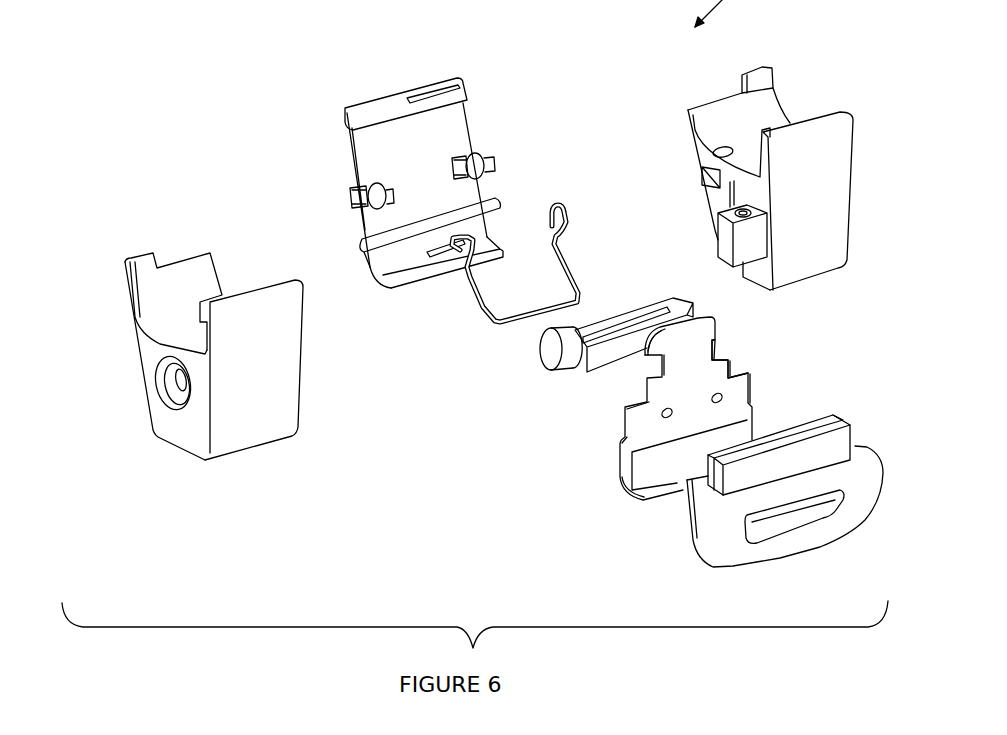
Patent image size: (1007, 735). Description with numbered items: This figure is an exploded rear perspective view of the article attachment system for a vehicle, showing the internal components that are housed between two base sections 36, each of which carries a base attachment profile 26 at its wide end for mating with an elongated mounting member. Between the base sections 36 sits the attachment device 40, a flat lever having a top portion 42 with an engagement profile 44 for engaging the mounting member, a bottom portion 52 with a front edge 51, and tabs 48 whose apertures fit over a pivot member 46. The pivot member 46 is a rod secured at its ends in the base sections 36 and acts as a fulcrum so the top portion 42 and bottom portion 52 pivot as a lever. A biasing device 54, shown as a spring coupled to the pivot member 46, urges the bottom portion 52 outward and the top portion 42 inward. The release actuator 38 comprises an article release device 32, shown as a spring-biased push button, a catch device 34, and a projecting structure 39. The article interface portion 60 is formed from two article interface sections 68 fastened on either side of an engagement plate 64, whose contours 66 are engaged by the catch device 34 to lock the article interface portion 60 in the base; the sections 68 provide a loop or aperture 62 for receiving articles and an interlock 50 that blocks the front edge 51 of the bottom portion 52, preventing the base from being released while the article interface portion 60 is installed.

The base attachment profile 26 is at (176, 290).
The base section 36 is at (235, 435).
The top portion 42 is at (406, 188).
The engagement profile 44 is at (378, 117).
The attachment device 40 is at (453, 127).
The tabs 48 is at (360, 180).
The pivot member 46 is at (500, 205).
The front edge 51 is at (420, 283).
The bottom portion 52 is at (370, 277).
The biasing device 54 is at (567, 223).
The article release device 32 is at (547, 353).
The projecting structure 39 is at (603, 317).
The catch device 34 is at (725, 360).
The release actuator 38 is at (660, 292).
The contours 66 is at (730, 340).
The engagement plate 64 is at (733, 403).
The interlock 50 is at (820, 447).
The article interface sections 68 is at (697, 515).
The loop or aperture 62 is at (780, 518).
The article interface portion 60 is at (555, 493).